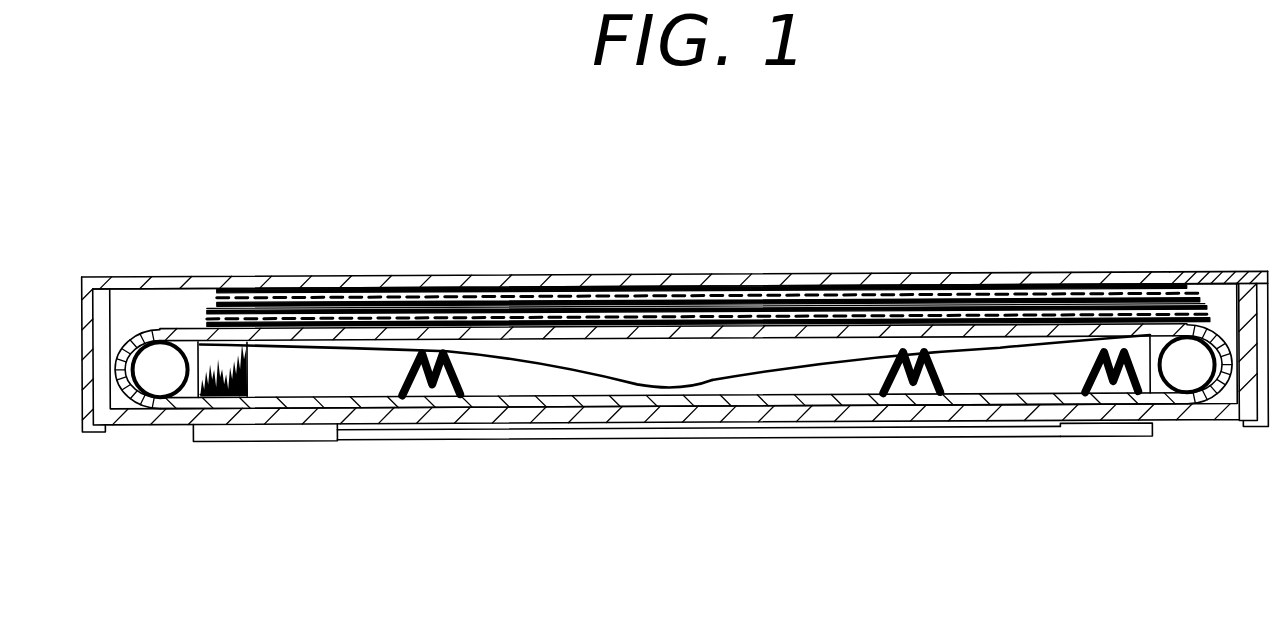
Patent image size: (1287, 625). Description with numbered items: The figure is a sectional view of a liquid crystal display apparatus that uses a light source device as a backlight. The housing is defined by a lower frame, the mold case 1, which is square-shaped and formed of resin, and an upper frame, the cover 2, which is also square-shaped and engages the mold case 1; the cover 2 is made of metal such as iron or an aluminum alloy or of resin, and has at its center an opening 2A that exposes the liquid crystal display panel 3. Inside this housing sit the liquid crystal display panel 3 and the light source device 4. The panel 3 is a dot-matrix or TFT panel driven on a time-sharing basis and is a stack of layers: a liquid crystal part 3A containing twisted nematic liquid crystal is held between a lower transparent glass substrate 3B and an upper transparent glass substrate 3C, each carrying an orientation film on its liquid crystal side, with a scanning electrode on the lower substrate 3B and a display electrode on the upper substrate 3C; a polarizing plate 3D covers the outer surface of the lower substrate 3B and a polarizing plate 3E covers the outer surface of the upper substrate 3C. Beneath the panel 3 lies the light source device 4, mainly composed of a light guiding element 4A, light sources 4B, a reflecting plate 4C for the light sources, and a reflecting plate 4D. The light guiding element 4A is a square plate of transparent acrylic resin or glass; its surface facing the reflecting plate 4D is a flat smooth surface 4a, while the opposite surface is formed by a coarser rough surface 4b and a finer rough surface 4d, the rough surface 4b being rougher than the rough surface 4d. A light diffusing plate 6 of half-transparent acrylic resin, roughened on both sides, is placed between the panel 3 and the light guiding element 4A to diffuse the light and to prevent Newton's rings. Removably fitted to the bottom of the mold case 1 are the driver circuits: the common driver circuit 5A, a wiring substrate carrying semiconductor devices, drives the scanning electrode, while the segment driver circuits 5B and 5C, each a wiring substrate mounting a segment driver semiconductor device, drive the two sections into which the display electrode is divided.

The lower frame (mold case) 1 is at (1213, 417).
The upper frame (cover) 2 is at (1218, 280).
The opening 2A is at (1160, 273).
The liquid crystal display panel 3 is at (708, 236).
The liquid crystal part 3A is at (568, 315).
The lower transparent glass substrate 3B is at (703, 222).
The upper transparent glass substrate 3C is at (617, 303).
The polarizing plate 3D is at (456, 308).
The polarizing plate 3E is at (685, 293).
The light source device 4 is at (625, 469).
The light guiding element 4A is at (262, 387).
The light source 4B is at (163, 385).
The reflecting plate for light source 4C is at (135, 398).
The reflecting plate 4D is at (673, 466).
The smooth surface 4a is at (860, 400).
The rough surface 4b is at (1000, 352).
The rough surface 4d is at (680, 392).
The common driver circuit 5A is at (393, 432).
The segment driver circuit 5B is at (297, 428).
The segment driver circuit 5C is at (1083, 430).
The light diffusing plate 6 is at (838, 333).